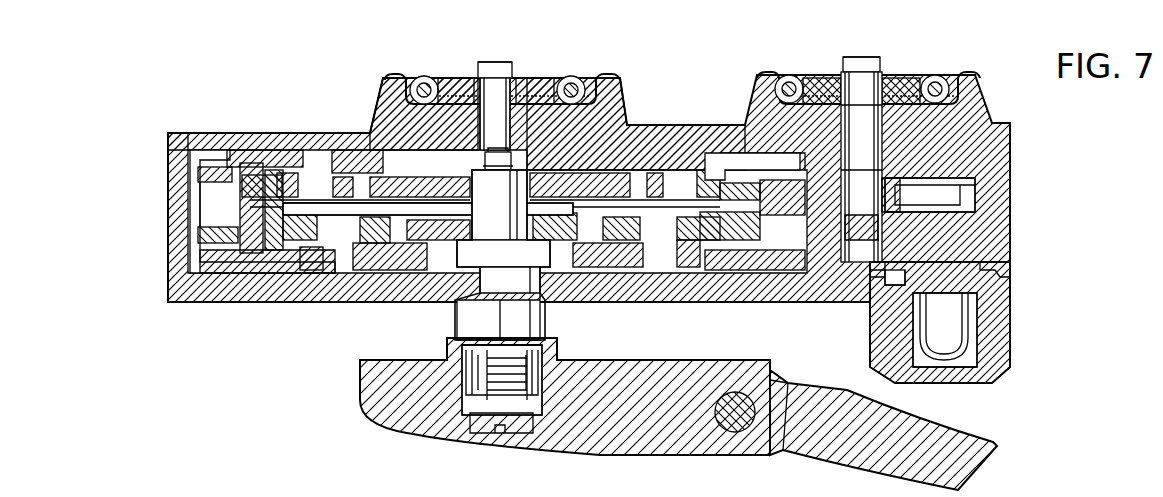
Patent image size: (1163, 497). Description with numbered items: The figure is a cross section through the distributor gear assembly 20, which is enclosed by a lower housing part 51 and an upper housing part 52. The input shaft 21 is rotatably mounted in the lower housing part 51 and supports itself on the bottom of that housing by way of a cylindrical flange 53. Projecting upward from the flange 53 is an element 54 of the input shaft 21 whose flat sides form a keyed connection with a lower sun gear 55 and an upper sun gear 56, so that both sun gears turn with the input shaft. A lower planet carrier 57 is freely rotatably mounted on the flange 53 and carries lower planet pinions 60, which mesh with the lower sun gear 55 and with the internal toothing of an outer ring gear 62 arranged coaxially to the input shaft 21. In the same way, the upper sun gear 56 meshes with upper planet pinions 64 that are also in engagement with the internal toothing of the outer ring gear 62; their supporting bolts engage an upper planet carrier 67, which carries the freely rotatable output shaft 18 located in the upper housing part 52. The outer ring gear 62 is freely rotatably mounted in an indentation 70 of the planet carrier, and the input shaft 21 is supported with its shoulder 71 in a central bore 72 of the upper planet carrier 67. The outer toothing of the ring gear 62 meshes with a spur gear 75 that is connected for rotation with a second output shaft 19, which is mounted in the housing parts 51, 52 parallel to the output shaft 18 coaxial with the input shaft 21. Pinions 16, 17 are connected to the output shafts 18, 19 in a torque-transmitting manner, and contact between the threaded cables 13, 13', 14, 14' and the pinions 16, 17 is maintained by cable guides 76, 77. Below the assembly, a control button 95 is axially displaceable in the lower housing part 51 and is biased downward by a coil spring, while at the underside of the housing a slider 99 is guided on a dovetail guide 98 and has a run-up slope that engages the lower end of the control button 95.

The distributor gear assembly 20 is at (150, 273).
The lower housing part 51 is at (195, 300).
The upper housing part 52 is at (190, 142).
The cylindrical flange 53 is at (425, 270).
The element with flat sides 54 is at (452, 272).
The lower sun gear 55 is at (560, 232).
The upper sun gear 56 is at (380, 152).
The lower planet carrier 57 is at (234, 262).
The lower planet pinions 60 is at (702, 236).
The outer ring gear 62 is at (236, 200).
The upper planet pinions 64 is at (697, 165).
The upper planet carrier 67 is at (243, 162).
The indentation 70 is at (273, 166).
The shoulder 71 is at (507, 160).
The central bore 72 is at (497, 146).
The spur gear 75 is at (935, 192).
The cable guide 76 is at (398, 78).
The cable guide 77 is at (966, 76).
The threaded cable 13 is at (423, 61).
The threaded cable 13' is at (563, 61).
The threaded cable 14 is at (785, 60).
The threaded cable 14' is at (931, 60).
The pinion 16 is at (452, 84).
The pinion 17 is at (814, 84).
The output shaft 18 is at (494, 84).
The output shaft 19 is at (860, 78).
The input shaft 21 is at (478, 284).
The control button 95 is at (935, 330).
The dovetail guide 98 is at (1014, 268).
The slider 99 is at (995, 330).